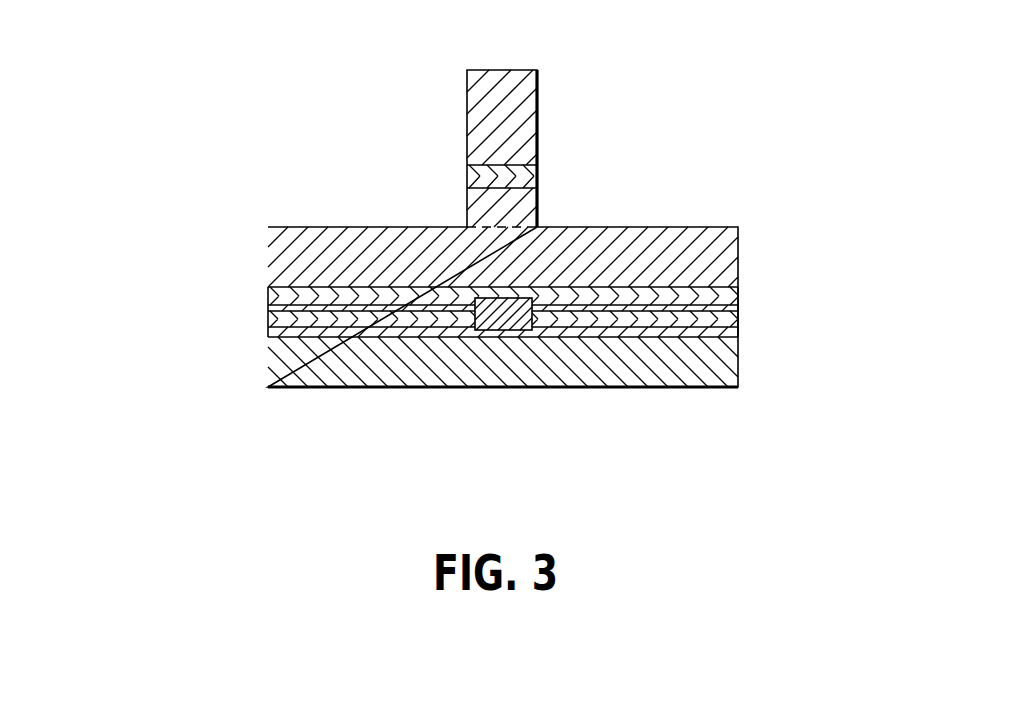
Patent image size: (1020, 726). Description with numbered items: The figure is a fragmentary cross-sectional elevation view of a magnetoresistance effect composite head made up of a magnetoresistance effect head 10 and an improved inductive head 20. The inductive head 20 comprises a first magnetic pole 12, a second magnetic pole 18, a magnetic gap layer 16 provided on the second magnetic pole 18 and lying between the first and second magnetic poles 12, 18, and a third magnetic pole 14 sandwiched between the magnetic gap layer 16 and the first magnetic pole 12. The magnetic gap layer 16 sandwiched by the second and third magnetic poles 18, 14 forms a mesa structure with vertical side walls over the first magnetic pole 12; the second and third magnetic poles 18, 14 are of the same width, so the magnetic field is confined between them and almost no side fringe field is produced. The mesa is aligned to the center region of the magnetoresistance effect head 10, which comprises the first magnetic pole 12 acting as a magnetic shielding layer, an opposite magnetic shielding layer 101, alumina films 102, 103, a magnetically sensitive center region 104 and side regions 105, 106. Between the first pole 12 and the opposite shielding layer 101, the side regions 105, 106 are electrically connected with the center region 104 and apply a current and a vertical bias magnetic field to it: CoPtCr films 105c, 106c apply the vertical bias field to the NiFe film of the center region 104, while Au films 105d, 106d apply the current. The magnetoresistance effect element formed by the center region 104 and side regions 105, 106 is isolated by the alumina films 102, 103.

The magnetoresistance effect head 10 is at (96, 224).
The first magnetic pole 12 is at (608, 228).
The third magnetic pole 14 is at (538, 197).
The magnetic gap layer 16 is at (538, 165).
The second magnetic pole 18 is at (507, 69).
The inductive head 20 is at (778, 17).
The opposite magnetic shielding layer 101 is at (383, 378).
The alumina film 102 is at (442, 333).
The alumina film 103 is at (358, 297).
The center region 104 is at (510, 322).
The side region 105 is at (162, 268).
The CoPtCr film 105c is at (268, 318).
The Au film 105d is at (268, 308).
The side region 106 is at (867, 282).
The CoPtCr film 106c is at (738, 318).
The Au film 106d is at (738, 302).